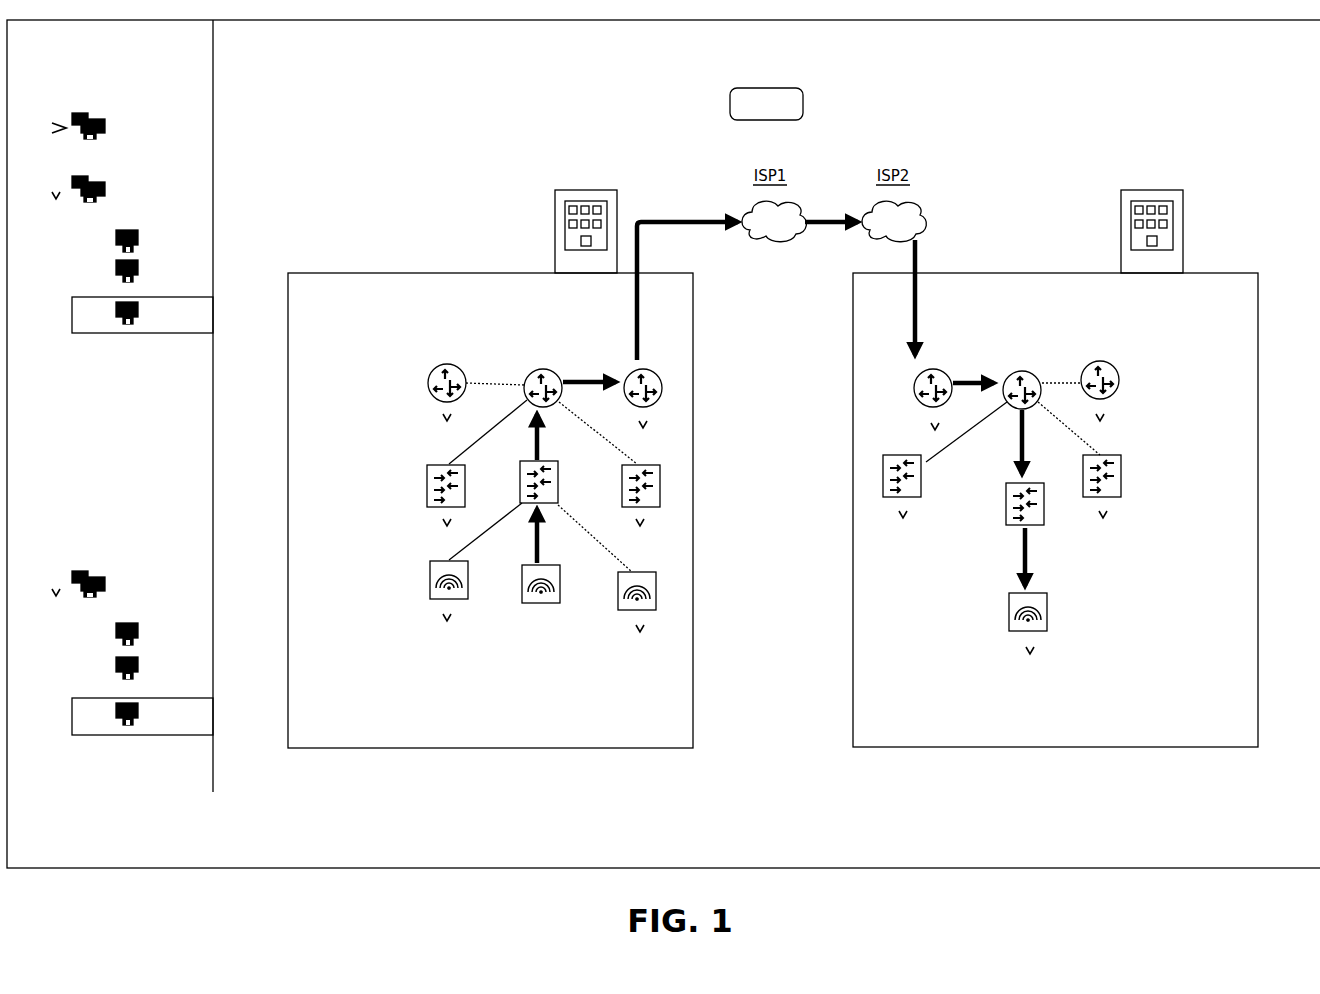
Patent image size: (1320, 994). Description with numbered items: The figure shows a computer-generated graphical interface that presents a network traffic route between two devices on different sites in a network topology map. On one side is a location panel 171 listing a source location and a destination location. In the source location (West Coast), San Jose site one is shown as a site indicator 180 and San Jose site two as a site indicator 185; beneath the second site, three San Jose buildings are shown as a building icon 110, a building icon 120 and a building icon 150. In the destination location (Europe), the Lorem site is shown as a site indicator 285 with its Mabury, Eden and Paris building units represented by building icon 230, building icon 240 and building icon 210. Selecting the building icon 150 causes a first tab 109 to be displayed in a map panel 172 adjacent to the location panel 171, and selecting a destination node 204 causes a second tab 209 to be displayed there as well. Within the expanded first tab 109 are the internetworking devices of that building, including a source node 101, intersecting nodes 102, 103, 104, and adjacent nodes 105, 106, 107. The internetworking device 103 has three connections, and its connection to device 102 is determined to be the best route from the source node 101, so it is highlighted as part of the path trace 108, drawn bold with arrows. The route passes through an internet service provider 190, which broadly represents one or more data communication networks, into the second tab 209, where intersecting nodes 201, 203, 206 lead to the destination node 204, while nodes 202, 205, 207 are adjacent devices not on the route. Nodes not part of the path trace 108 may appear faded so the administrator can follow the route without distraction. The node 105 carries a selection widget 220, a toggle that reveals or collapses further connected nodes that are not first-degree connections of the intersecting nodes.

The source node 101 is at (527, 646).
The intersecting node 102 is at (566, 502).
The internetworking device 103 is at (524, 351).
The intersecting node 104 is at (594, 351).
The node 105 is at (431, 351).
The node 106 is at (431, 656).
The node 107 is at (624, 668).
The path trace 108 is at (379, 497).
The first tab 109 is at (629, 554).
The building icon 110 is at (92, 255).
The building icon 120 is at (94, 285).
The building icon 150 is at (62, 321).
The location panel 171 is at (44, 842).
The map panel 172 is at (1318, 821).
The site indicator 180 is at (44, 139).
The site indicator 185 is at (46, 202).
The internet service provider 190 is at (750, 75).
The intersecting node 201 is at (927, 351).
The node 202 is at (892, 557).
The intersecting node 203 is at (997, 351).
The destination node 204 is at (1014, 691).
The node 205 is at (1084, 351).
The intersecting node 206 is at (1037, 554).
The node 207 is at (1089, 554).
The second tab 209 is at (1199, 718).
The building icon 210 is at (59, 720).
The selection widget 220 is at (430, 413).
The building icon 230 is at (90, 648).
The building icon 240 is at (92, 682).
The site indicator 285 is at (46, 598).